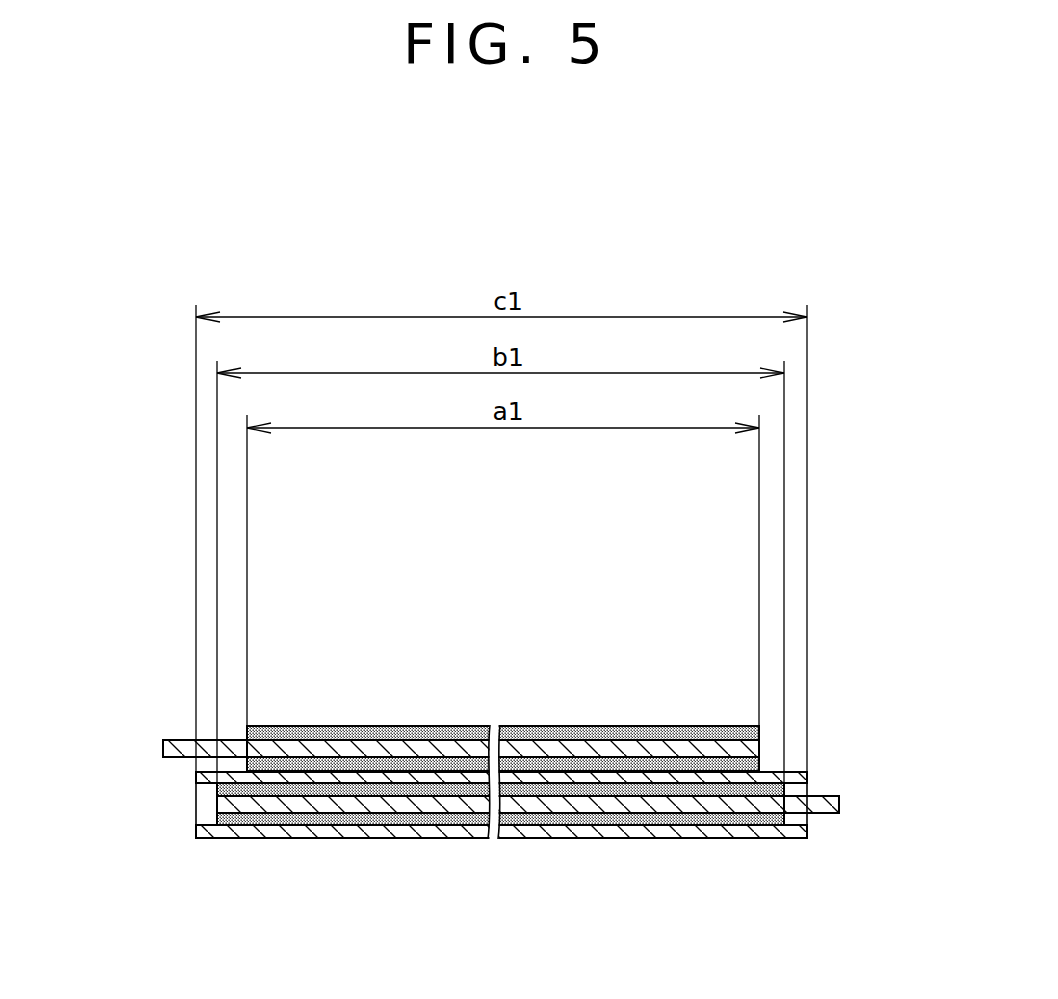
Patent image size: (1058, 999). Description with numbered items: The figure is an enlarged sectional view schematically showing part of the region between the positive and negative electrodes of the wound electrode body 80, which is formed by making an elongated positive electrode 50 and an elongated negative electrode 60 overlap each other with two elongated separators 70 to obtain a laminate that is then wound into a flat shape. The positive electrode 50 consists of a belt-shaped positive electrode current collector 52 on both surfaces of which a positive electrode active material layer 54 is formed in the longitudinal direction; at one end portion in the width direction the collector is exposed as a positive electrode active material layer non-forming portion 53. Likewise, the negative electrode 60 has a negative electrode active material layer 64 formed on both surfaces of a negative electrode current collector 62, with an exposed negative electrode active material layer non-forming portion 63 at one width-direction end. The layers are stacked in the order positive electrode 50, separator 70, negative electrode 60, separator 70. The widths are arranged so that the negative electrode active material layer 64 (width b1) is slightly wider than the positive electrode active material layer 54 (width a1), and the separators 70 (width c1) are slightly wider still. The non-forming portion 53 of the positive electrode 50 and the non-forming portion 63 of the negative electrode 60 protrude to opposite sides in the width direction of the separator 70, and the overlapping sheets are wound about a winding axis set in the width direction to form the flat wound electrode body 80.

The positive electrode 50 is at (406, 696).
The positive electrode current collector 52 is at (603, 745).
The positive electrode active material layer non-forming portion 53 is at (187, 742).
The positive electrode active material layer 54 is at (302, 748).
The negative electrode 60 is at (584, 852).
The negative electrode current collector 62 is at (406, 808).
The negative electrode active material layer non-forming portion 63 is at (835, 794).
The negative electrode active material layer 64 is at (572, 826).
The separator 70 is at (215, 785).
The wound electrode body 80 is at (503, 779).